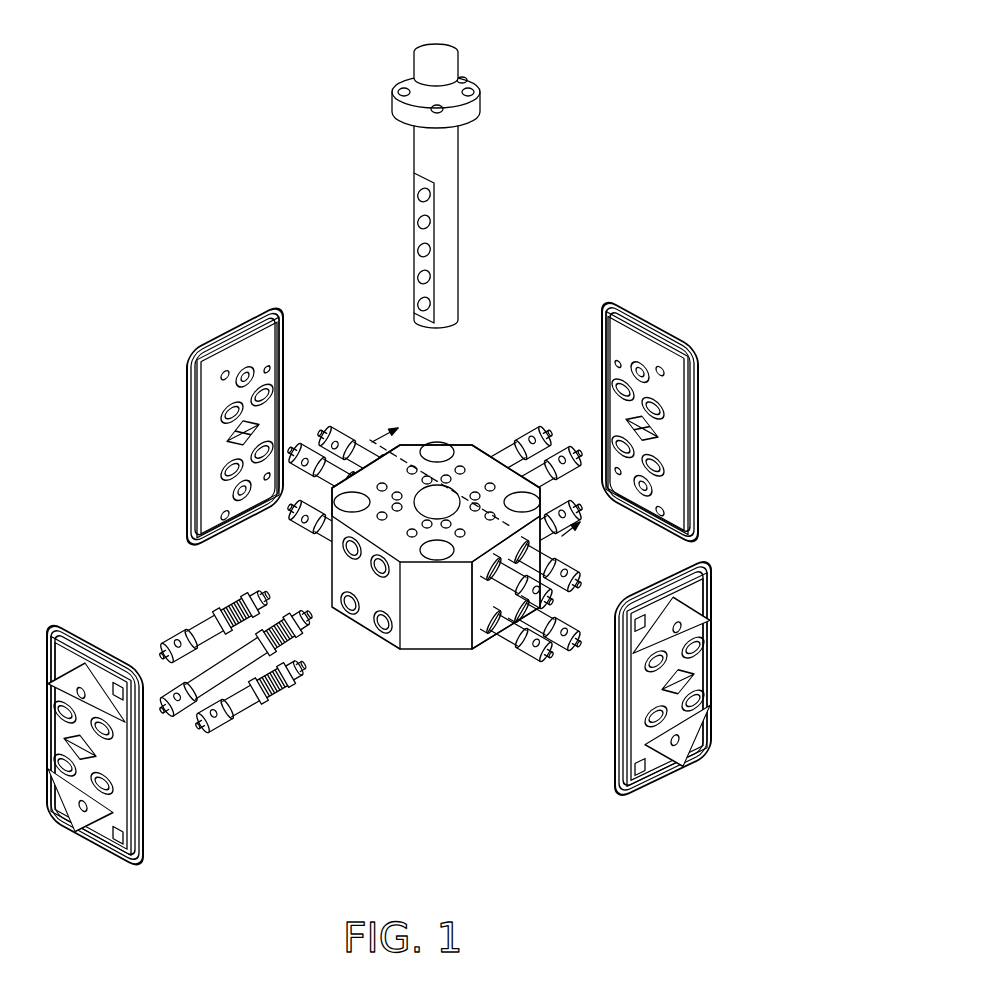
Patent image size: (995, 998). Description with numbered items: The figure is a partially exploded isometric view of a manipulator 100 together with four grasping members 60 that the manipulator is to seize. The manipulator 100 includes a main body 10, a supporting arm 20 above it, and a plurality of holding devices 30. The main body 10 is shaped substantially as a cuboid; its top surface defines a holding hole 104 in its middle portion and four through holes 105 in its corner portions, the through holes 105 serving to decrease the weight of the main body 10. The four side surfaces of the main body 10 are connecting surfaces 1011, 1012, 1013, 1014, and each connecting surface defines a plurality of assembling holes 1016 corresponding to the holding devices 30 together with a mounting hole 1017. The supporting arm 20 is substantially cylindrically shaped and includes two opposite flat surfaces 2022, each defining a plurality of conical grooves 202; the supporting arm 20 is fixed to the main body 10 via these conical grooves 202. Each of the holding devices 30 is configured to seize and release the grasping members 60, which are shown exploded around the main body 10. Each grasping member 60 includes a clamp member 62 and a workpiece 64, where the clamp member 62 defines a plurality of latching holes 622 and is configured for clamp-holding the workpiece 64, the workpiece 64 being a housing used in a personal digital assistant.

The manipulator 100 is at (219, 86).
The supporting arm 20 is at (468, 45).
The flat surfaces 2022 is at (424, 207).
The conical grooves 202 is at (424, 266).
The main body 10 is at (488, 397).
The connecting surface 1013 is at (482, 457).
The connecting surface 1014 is at (360, 452).
The through holes 105 is at (437, 452).
The holding hole 104 is at (437, 505).
The mounting hole 1017 is at (366, 583).
The connecting surface 1011 is at (368, 618).
The assembling holes 1016 is at (386, 628).
The connecting surface 1012 is at (485, 638).
The holding devices 30 is at (190, 607).
The grasping members 60 is at (337, 278).
The workpiece 64 is at (282, 303).
The clamp member 62 is at (262, 342).
The latching holes 622 is at (228, 412).